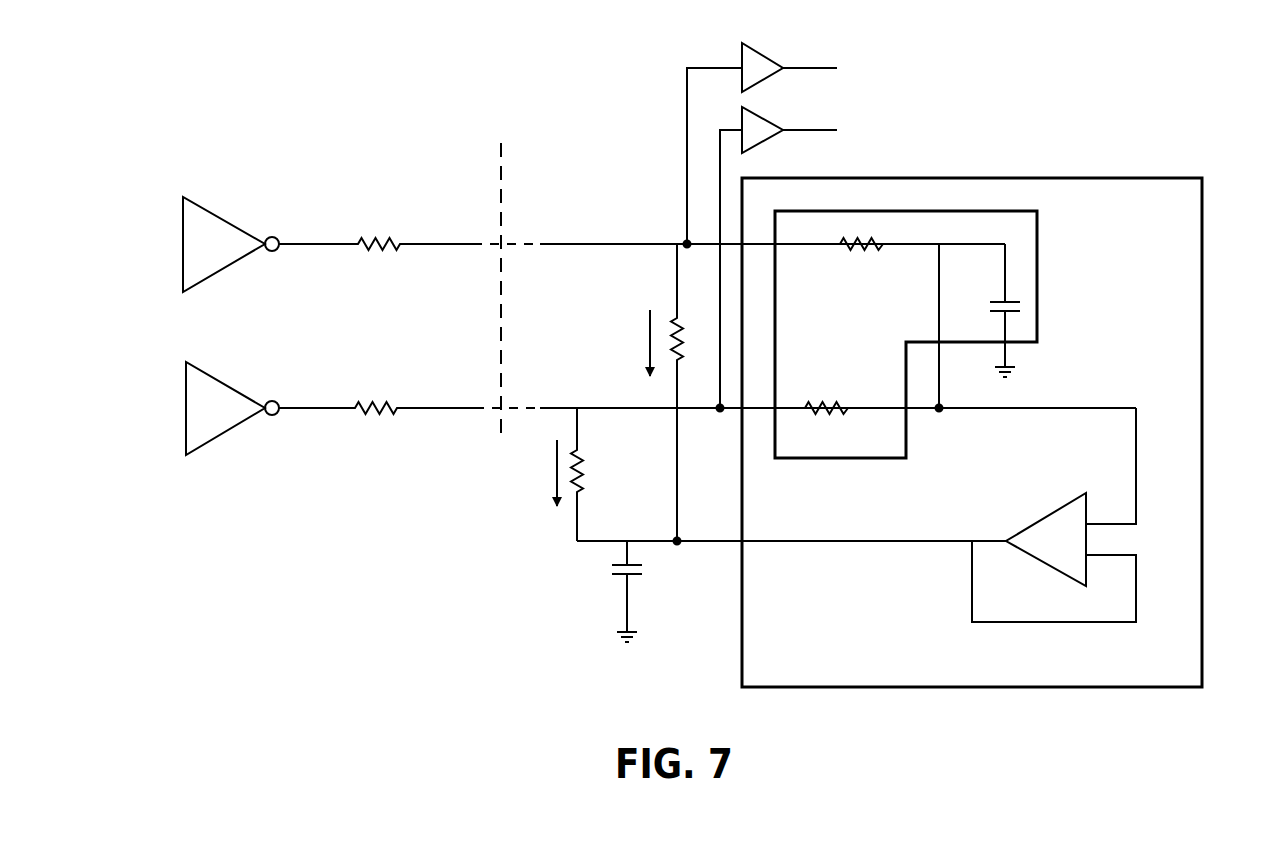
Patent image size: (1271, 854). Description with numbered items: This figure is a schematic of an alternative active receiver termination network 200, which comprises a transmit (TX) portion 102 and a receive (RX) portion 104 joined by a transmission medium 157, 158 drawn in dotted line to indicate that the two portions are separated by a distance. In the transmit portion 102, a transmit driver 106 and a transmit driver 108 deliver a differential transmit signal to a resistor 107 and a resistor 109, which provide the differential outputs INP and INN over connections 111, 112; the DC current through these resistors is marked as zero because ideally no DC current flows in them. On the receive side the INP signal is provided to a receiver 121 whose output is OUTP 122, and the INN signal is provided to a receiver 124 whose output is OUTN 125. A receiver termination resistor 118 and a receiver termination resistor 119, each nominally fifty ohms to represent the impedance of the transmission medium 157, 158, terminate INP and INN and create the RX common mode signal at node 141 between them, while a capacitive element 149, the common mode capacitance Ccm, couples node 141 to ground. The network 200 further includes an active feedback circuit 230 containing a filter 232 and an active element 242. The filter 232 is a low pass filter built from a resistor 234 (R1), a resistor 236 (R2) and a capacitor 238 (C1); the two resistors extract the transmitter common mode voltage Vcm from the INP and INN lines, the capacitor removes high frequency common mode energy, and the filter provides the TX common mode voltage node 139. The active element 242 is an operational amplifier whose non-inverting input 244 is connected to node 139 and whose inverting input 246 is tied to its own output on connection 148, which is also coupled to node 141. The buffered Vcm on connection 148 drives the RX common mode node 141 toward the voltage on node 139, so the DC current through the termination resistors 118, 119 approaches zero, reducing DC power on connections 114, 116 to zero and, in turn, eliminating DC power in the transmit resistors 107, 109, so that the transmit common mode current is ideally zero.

The network 200 is at (148, 88).
The transmit portion 102 is at (347, 112).
The receive portion 104 is at (592, 95).
The transmit driver 106 is at (205, 212).
The resistor 107 is at (373, 240).
The transmit driver 108 is at (207, 375).
The resistor 109 is at (373, 404).
The connection 111 is at (455, 246).
The connection 112 is at (448, 410).
The connection 114 is at (555, 246).
The connection 116 is at (627, 408).
The receiver termination resistor 118 is at (683, 352).
The receiver termination resistor 119 is at (587, 470).
The receiver 121 is at (762, 60).
The OUTP output 122 is at (838, 70).
The receiver 124 is at (762, 116).
The OUTN output 125 is at (838, 132).
The common mode voltage node 139 is at (940, 410).
The common mode signal node 141 is at (677, 543).
The connection 148 is at (907, 538).
The capacitive element 149 is at (633, 576).
The transmission medium 157 is at (513, 250).
The transmission medium 158 is at (479, 405).
The active feedback circuit 230 is at (1022, 178).
The filter 232 is at (1038, 243).
The resistor 234 is at (862, 250).
The resistor 236 is at (825, 402).
The capacitor 238 is at (998, 311).
The active element 242 is at (1045, 522).
The non-inverting input 244 is at (1110, 522).
The inverting input 246 is at (1104, 557).